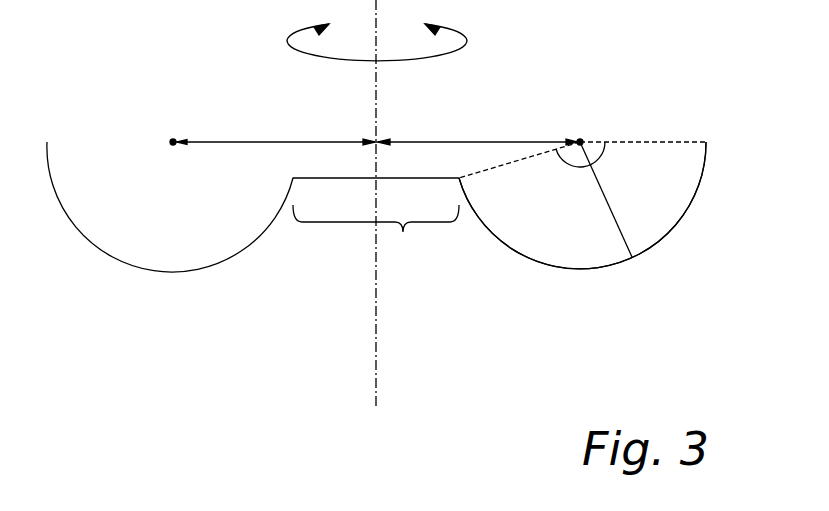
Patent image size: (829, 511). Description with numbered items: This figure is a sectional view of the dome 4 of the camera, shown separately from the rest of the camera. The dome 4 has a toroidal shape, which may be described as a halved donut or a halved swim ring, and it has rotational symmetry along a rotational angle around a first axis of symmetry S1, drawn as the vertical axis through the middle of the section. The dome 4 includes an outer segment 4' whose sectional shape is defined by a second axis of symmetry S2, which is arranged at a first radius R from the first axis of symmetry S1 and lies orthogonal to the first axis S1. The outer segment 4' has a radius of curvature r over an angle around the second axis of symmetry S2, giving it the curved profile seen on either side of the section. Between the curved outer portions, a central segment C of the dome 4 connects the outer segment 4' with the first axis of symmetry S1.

The dome 4 is at (406, 242).
The outer segment 4' is at (582, 245).
The first axis of symmetry S1 is at (376, 223).
The second axis of symmetry S2 is at (582, 145).
The first radius R is at (375, 130).
The radius of curvature r is at (606, 199).
The central segment C is at (376, 238).